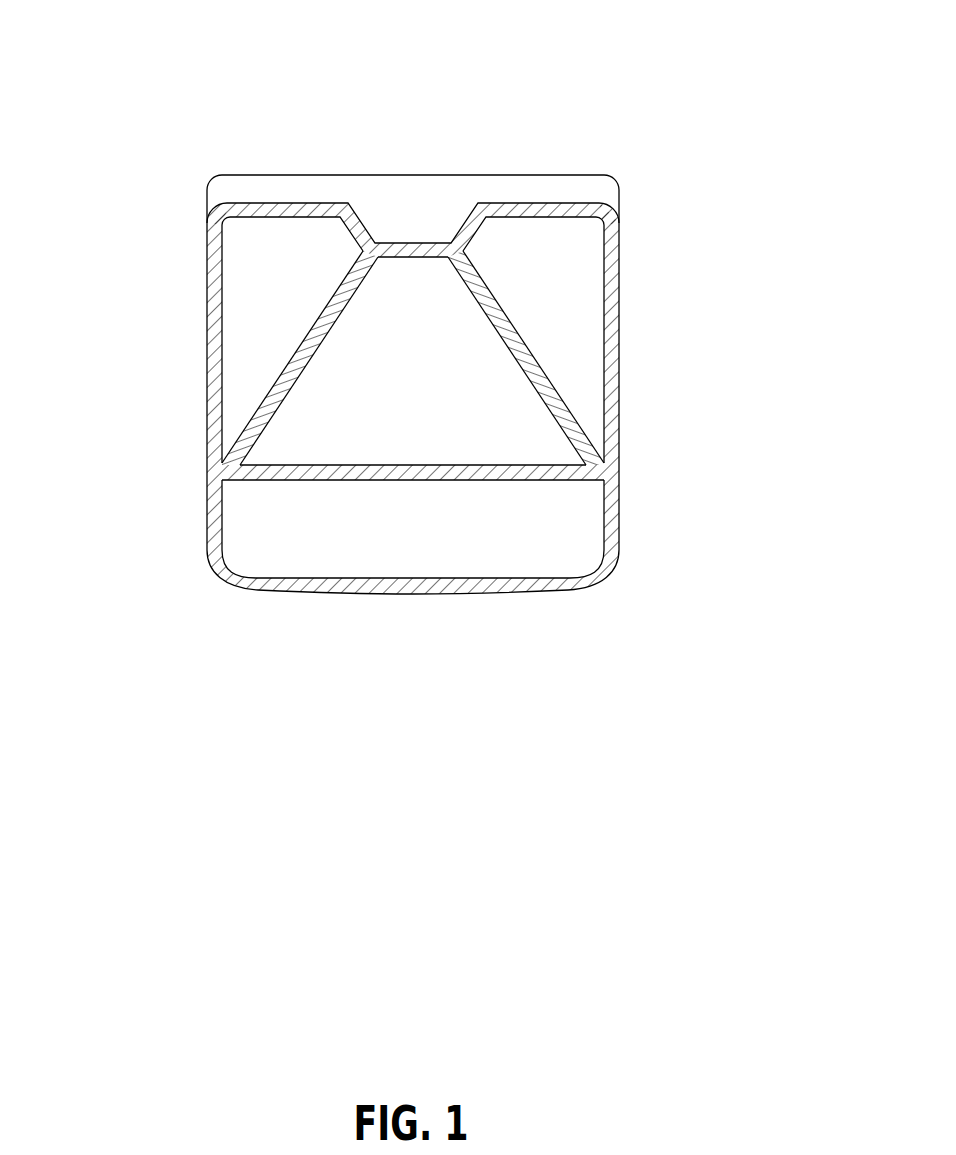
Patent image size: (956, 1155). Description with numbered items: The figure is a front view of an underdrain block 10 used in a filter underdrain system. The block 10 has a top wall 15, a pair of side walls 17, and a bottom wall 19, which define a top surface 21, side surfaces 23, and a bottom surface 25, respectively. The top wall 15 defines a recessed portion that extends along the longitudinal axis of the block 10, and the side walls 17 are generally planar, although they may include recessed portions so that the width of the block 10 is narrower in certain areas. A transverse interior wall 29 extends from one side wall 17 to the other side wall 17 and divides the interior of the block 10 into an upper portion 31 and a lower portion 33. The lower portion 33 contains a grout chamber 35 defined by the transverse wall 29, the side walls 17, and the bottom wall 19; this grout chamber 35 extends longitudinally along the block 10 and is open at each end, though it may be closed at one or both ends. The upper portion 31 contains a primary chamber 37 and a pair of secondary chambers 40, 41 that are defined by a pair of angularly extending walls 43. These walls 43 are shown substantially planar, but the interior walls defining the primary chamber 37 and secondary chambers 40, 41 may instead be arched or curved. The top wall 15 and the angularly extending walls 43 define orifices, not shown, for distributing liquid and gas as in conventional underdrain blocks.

The underdrain block 10 is at (187, 162).
The top wall 15 is at (317, 203).
The side walls 17 is at (207, 242).
The bottom wall 19 is at (577, 590).
The top surface 21 is at (555, 203).
The side surfaces 23 is at (207, 327).
The bottom surface 25 is at (502, 595).
The transverse interior wall 29 is at (270, 483).
The upper portion 31 is at (648, 255).
The lower portion 33 is at (647, 546).
The grout chamber 35 is at (461, 539).
The primary chamber 37 is at (386, 389).
The secondary chamber 40 is at (264, 284).
The secondary chamber 41 is at (539, 294).
The angularly extending walls 43 is at (257, 424).